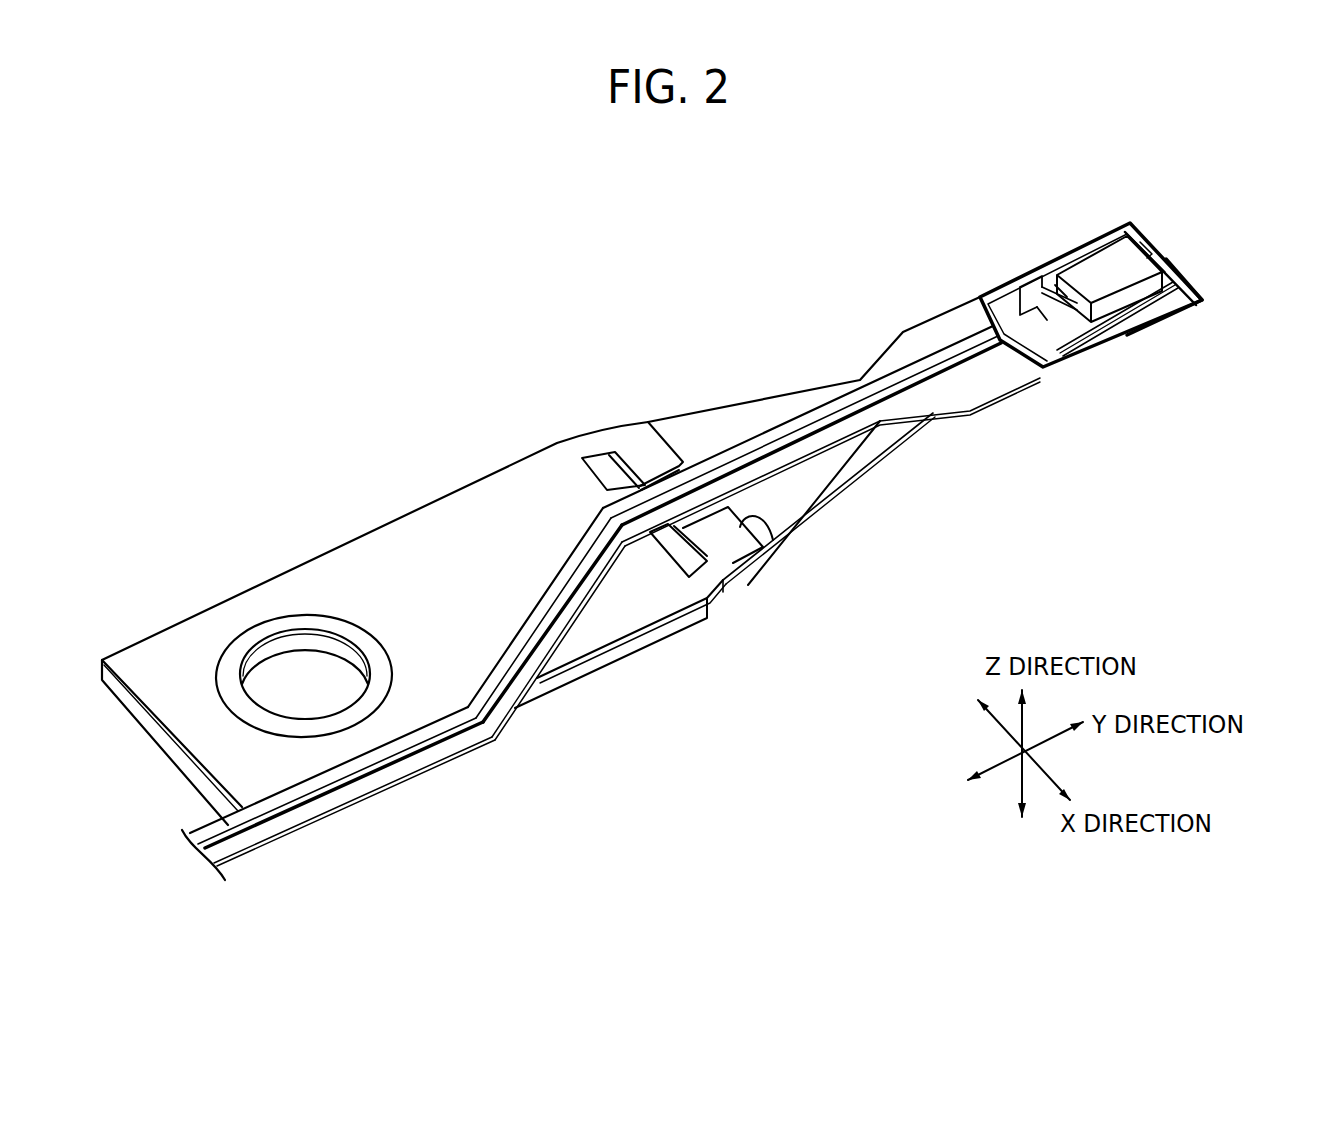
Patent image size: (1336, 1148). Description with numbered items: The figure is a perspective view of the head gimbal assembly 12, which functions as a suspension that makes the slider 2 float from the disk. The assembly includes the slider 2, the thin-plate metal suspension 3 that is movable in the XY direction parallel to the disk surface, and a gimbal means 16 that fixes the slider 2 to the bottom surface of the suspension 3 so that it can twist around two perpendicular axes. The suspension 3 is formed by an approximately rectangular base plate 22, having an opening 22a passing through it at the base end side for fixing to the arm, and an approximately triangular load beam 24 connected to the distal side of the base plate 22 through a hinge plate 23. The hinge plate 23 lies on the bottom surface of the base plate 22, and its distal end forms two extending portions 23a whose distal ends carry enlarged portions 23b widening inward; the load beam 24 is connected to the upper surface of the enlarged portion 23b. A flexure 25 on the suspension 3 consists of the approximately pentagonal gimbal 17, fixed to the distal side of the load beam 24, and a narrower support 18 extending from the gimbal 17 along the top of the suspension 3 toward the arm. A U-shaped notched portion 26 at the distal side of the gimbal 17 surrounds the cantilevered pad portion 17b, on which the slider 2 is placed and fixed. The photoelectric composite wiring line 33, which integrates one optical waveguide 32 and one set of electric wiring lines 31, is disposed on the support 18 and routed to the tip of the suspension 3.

The slider 2 is at (1100, 262).
The suspension 3 is at (332, 414).
The head gimbal assembly 12 is at (425, 312).
The gimbal means 16 is at (925, 338).
The gimbal 17 is at (995, 300).
The pad portion 17b is at (1158, 304).
The support 18 is at (550, 595).
The base plate 22 is at (553, 682).
The opening 22a is at (296, 643).
The hinge plate 23 is at (612, 618).
The extending portion 23a is at (722, 558).
The enlarged portion 23b is at (773, 540).
The load beam 24 is at (806, 481).
The flexure 25 is at (735, 440).
The notched portion 26 is at (1010, 292).
The electric wiring line 31 is at (1120, 320).
The optical waveguide 32 is at (1050, 330).
The photoelectric composite wiring line 33 is at (265, 822).